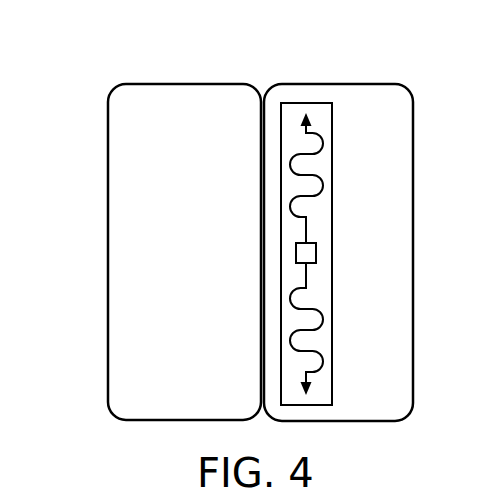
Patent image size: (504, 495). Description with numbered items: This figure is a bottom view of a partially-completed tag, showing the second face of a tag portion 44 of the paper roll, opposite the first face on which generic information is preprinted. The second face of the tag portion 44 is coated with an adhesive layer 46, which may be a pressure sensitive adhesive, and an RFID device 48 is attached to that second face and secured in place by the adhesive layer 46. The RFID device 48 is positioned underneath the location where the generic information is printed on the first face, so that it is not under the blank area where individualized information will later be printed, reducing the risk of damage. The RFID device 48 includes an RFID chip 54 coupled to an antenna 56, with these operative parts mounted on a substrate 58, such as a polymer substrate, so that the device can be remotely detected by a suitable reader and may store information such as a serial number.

The tag portion 44 is at (108, 65).
The adhesive layer 46 is at (134, 373).
The RFID device 48 is at (314, 82).
The RFID chip 54 is at (316, 253).
The antenna 56 is at (323, 143).
The substrate 58 is at (323, 110).